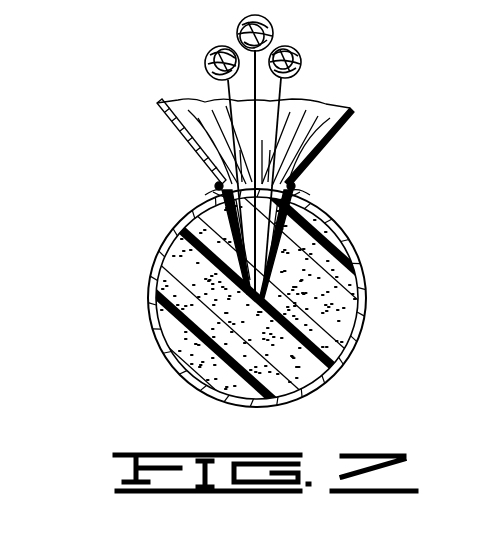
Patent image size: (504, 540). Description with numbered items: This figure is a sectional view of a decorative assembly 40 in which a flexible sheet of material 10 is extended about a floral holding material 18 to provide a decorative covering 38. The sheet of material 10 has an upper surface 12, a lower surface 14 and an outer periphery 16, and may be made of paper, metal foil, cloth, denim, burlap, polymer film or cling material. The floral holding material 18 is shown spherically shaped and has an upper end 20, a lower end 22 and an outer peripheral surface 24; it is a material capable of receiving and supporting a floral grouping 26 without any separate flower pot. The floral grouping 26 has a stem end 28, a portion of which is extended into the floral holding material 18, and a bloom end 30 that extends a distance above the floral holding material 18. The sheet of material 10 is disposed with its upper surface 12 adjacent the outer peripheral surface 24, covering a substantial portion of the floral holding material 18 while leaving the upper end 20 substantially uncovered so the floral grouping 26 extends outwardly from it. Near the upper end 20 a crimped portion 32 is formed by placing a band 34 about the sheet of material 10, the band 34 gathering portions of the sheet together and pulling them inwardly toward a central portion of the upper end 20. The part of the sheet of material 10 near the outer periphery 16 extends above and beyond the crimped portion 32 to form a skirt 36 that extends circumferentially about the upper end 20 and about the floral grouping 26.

The sheet of material 10 is at (360, 276).
The upper surface 12 is at (347, 348).
The lower surface 14 is at (362, 311).
The outer periphery 16 is at (352, 112).
The floral holding material 18 is at (190, 348).
The upper end 20 is at (232, 100).
The lower end 22 is at (246, 390).
The outer peripheral surface 24 is at (320, 372).
The floral grouping 26 is at (284, 103).
The stem end 28 is at (286, 236).
The bloom end 30 is at (300, 56).
The crimped portion 32 is at (330, 131).
The band 34 is at (215, 184).
The skirt 36 is at (181, 133).
The decorative covering 38 is at (150, 280).
The decorative assembly 40 is at (124, 224).